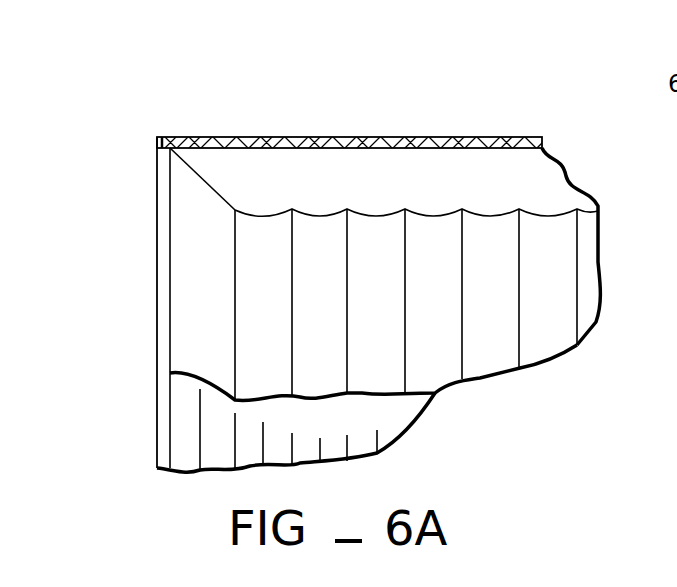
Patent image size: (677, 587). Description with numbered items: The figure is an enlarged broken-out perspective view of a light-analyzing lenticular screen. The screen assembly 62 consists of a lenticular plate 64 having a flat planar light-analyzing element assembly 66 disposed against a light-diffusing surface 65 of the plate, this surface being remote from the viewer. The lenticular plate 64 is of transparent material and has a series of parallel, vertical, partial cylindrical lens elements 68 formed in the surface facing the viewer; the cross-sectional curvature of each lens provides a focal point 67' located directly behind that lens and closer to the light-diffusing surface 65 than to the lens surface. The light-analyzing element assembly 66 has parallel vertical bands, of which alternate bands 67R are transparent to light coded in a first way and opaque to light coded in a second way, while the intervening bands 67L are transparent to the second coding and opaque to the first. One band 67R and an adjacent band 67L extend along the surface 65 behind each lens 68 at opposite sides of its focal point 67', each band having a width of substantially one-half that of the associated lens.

The screen assembly 62 is at (578, 158).
The lenticular plate 64 is at (188, 306).
The light-diffusing surface 65 is at (541, 134).
The light-analyzing element assembly 66 is at (157, 249).
The alternate bands 67R is at (178, 134).
The intervening bands 67L is at (212, 135).
The focal point 67' is at (446, 118).
The partial cylindrical lens elements 68 is at (503, 295).